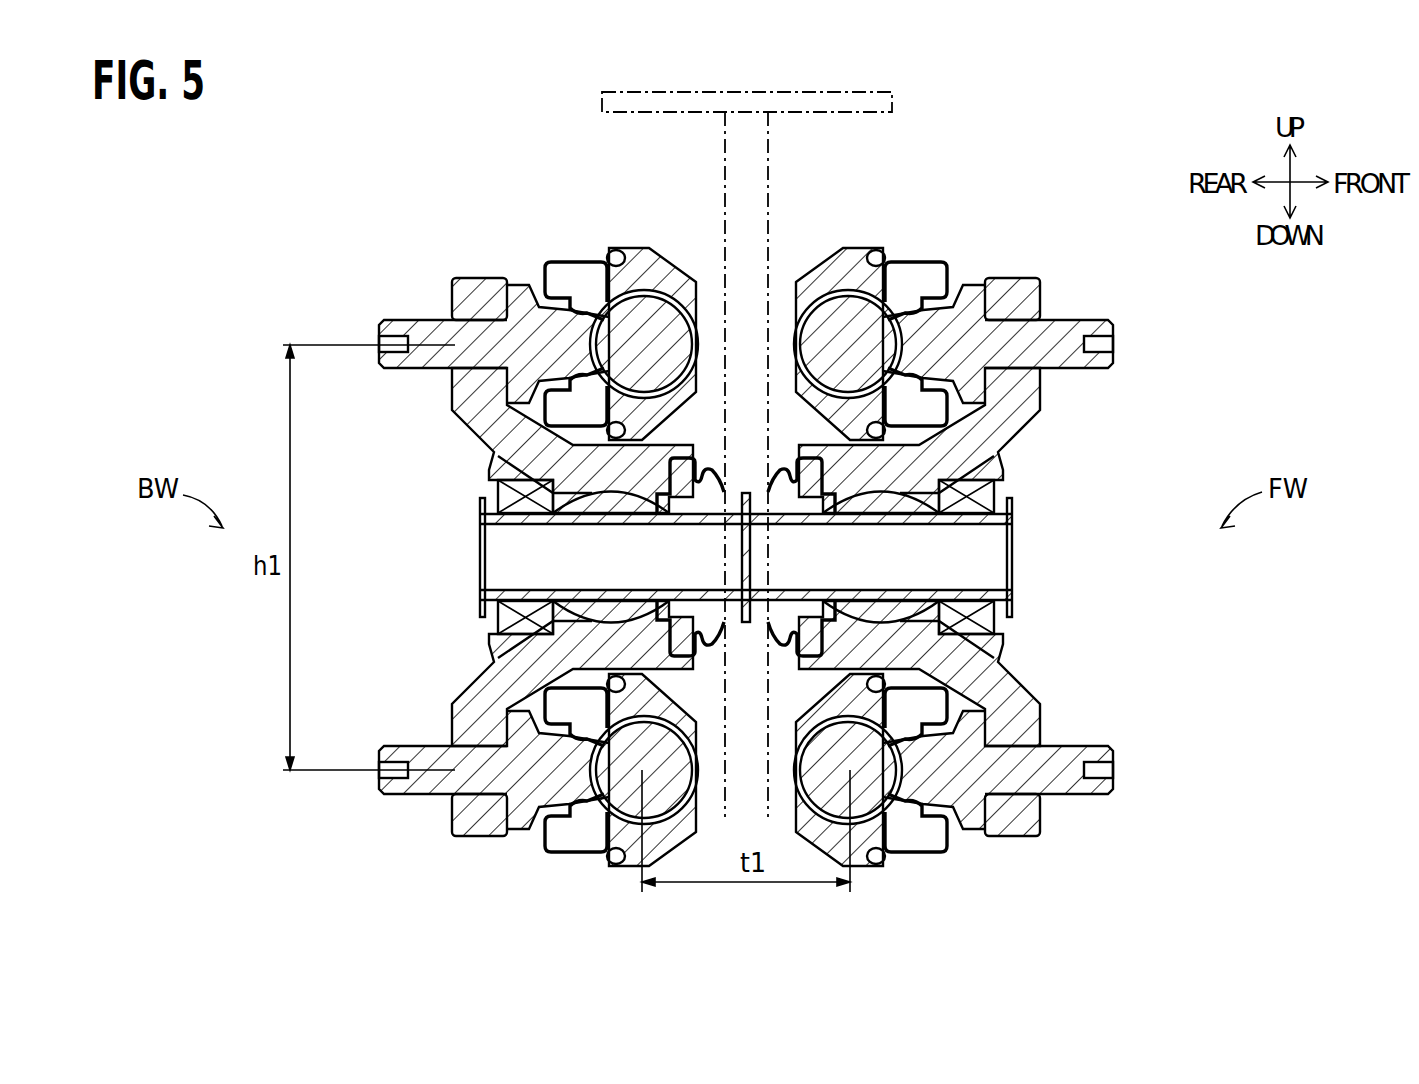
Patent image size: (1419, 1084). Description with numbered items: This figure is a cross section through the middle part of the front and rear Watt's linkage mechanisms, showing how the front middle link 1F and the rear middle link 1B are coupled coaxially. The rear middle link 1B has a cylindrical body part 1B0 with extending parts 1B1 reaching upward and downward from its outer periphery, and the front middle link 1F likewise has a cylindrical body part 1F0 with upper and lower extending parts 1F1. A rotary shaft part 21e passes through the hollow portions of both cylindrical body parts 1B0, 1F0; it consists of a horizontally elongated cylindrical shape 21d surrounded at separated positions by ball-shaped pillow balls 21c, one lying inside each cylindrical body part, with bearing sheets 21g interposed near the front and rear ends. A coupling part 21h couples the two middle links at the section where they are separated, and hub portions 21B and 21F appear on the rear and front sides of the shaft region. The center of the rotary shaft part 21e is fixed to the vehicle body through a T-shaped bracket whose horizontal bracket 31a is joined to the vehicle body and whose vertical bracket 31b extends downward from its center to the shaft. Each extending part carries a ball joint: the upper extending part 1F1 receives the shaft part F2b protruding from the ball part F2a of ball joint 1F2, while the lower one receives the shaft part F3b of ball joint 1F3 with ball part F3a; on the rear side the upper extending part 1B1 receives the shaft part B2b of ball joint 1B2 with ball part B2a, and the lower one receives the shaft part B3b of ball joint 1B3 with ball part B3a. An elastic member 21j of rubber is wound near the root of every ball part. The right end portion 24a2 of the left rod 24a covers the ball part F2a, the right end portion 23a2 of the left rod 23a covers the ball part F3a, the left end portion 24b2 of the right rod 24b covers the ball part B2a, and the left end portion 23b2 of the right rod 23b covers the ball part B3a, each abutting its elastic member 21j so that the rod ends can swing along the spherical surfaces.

The horizontal bracket 31a is at (675, 92).
The vertical bracket 31b is at (768, 138).
The ball joint 1B2 is at (585, 340).
The right rod 24b is at (632, 273).
The left end portion 24b2 is at (640, 330).
The left rod 24a is at (862, 273).
The right end portion 24a2 is at (853, 335).
The elastic member 21j is at (578, 258).
The ball part B2a is at (655, 262).
The ball part F2a is at (842, 335).
The ball joint 1F2 is at (972, 300).
The extending part 1B1 is at (488, 300).
The extending part 1F1 is at (1010, 300).
The shaft part B2b is at (440, 332).
The shaft part F2b is at (1062, 332).
The rear middle link 1B is at (477, 395).
The front middle link 1F is at (1027, 393).
The rear hub 21B is at (497, 440).
The front hub 21F is at (992, 425).
The bearing sheet 21g is at (498, 496).
The pillow ball 21c is at (600, 530).
The coupling part 21h is at (700, 606).
The cylindrical shape 21d is at (930, 566).
The rotary shaft part 21e is at (1096, 500).
The cylindrical body part 1B0 is at (570, 650).
The cylindrical body part 1F0 is at (930, 655).
The shaft part B3b is at (433, 762).
The shaft part F3b is at (1040, 762).
The ball joint 1B3 is at (530, 812).
The ball joint 1F3 is at (960, 835).
The ball part B3a is at (612, 855).
The ball part F3a is at (884, 855).
The right rod 23b is at (609, 841).
The left end portion 23b2 is at (640, 790).
The left rod 23a is at (882, 841).
The right end portion 23a2 is at (858, 790).